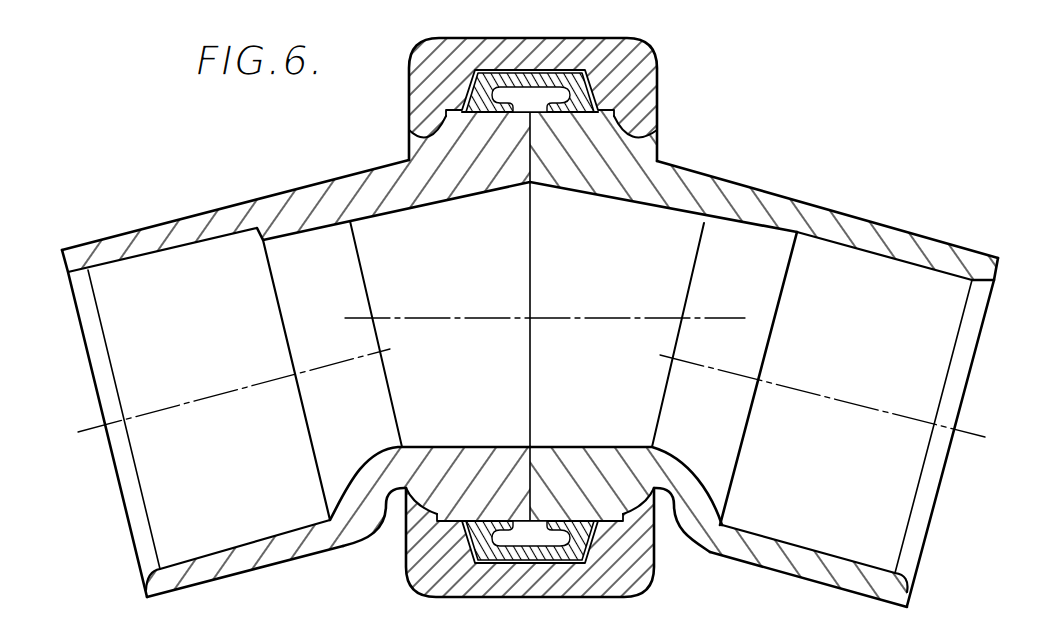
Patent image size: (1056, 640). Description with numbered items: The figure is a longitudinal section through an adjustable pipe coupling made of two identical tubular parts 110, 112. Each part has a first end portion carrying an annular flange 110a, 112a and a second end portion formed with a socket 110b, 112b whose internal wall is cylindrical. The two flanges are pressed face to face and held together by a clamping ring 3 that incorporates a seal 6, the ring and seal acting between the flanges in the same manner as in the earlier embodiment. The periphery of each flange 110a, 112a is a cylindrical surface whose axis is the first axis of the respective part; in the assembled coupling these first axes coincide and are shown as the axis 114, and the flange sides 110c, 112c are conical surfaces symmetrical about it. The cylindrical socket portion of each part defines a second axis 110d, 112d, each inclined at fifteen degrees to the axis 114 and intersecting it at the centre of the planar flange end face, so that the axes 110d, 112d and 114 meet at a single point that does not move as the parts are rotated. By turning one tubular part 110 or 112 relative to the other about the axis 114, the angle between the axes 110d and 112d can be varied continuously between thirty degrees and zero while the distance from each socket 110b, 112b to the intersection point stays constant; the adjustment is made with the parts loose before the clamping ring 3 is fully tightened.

The clamping ring 3 is at (567, 52).
The seal 6 is at (515, 78).
The tubular part 110 is at (253, 213).
The annular flange 110a is at (453, 150).
The socket 110b is at (117, 263).
The side of flange 110c is at (420, 134).
The second axis 110d is at (224, 397).
The tubular part 112 is at (745, 205).
The annular flange 112a is at (582, 137).
The socket 112b is at (942, 277).
The side of flange 112c is at (648, 143).
The second axis 112d is at (838, 392).
The first axis 114 is at (440, 318).